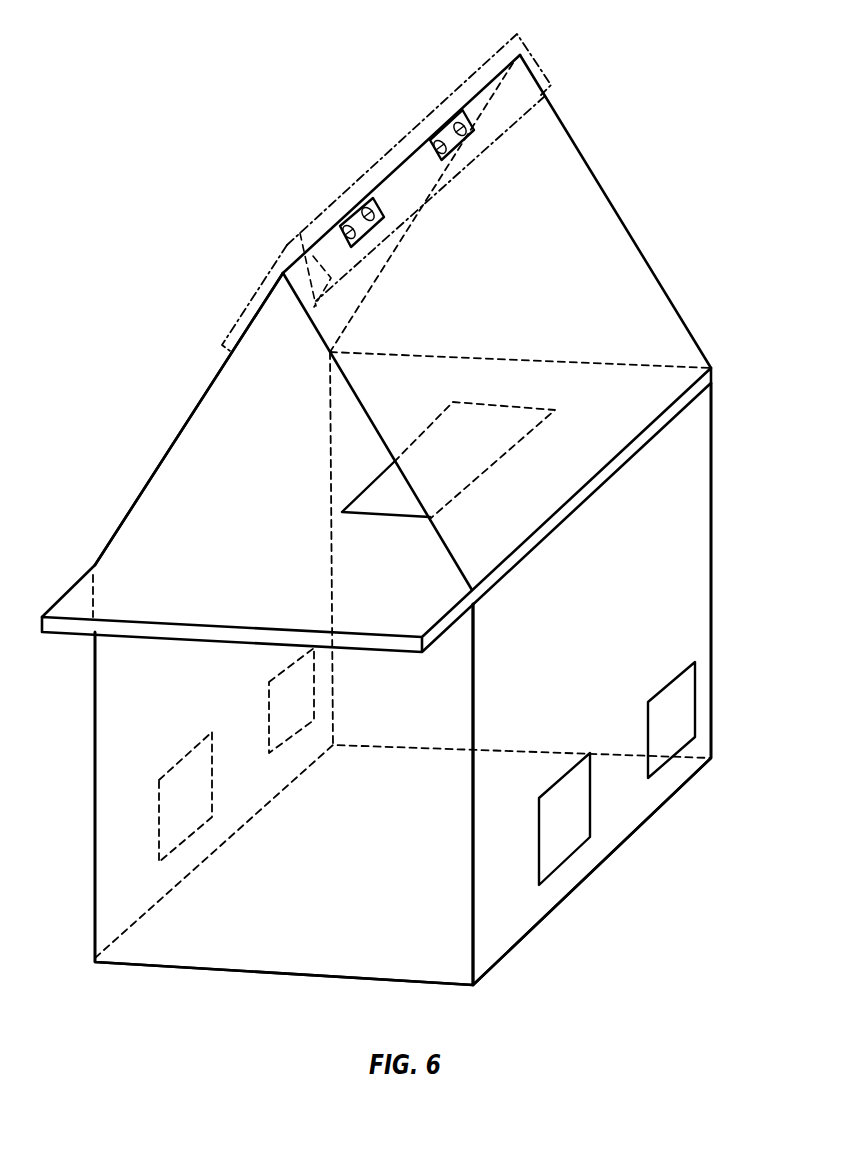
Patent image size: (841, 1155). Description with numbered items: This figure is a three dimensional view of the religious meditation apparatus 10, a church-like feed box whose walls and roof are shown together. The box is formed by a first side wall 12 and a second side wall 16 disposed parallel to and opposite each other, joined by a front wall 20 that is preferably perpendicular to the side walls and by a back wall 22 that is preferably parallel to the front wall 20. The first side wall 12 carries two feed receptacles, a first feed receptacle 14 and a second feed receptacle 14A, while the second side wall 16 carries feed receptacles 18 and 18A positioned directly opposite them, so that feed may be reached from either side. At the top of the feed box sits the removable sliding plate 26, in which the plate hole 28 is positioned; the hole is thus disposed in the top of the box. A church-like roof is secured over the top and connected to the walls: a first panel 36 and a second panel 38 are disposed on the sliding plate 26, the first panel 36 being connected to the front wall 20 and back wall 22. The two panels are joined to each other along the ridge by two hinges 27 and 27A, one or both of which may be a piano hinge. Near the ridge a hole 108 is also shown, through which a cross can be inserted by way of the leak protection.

The building structure 10 is at (683, 61).
The first side wall 12 is at (93, 853).
The first feed receptacle 14 is at (283, 718).
The second feed receptacle 14A is at (178, 815).
The second side wall 16 is at (667, 610).
The feed receptacle 18 is at (662, 703).
The feed receptacle 18A is at (563, 832).
The front wall 20 is at (140, 715).
The back wall 22 is at (682, 507).
The sliding plate 26 is at (640, 388).
The hinge 27 is at (443, 128).
The hinge 27A is at (355, 212).
The plate hole 28 is at (377, 495).
The first panel 36 is at (573, 181).
The second panel 38 is at (258, 312).
The hole 108 is at (297, 246).